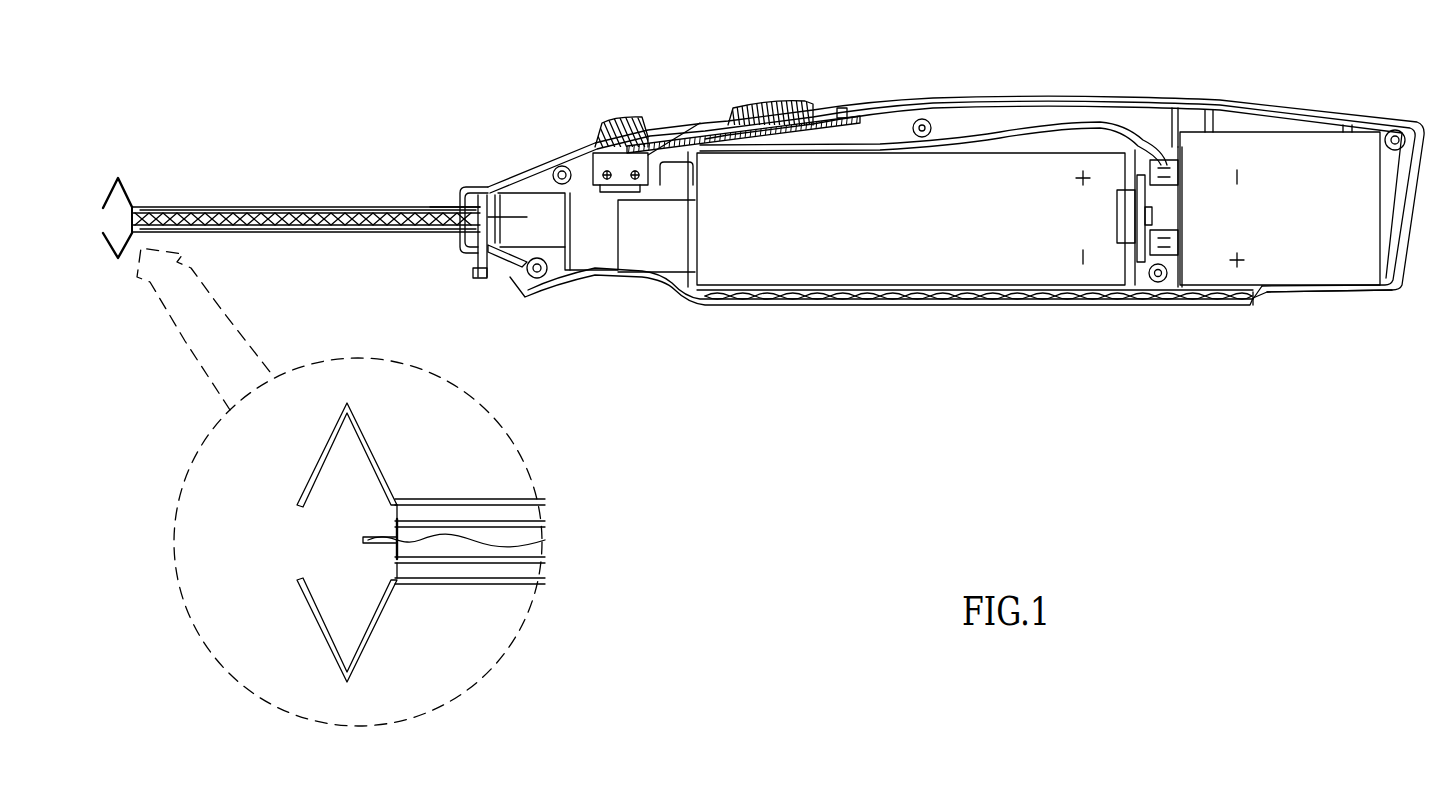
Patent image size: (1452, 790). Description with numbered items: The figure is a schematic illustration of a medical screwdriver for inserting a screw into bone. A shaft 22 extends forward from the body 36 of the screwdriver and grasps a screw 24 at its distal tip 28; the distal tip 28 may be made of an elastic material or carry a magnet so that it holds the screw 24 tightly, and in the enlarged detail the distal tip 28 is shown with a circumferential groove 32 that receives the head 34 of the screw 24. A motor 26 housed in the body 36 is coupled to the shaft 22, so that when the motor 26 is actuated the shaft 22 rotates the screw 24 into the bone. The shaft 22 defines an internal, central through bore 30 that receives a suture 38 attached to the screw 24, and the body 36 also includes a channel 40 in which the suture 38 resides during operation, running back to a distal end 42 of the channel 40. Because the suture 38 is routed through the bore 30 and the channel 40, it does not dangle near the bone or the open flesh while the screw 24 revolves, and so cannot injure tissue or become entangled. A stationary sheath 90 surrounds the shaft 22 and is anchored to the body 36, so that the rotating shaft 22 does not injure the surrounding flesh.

The shaft 22 is at (353, 228).
The screw 24 is at (130, 218).
The motor 26 is at (920, 238).
The distal tip 28 is at (137, 210).
The through bore 30 is at (365, 213).
The circumferential groove 32 is at (399, 511).
The head 34 is at (427, 560).
The body 36 is at (1300, 107).
The suture 38 is at (431, 207).
The channel 40 is at (913, 305).
The distal end 42 is at (1255, 300).
The stationary sheath 90 is at (303, 207).